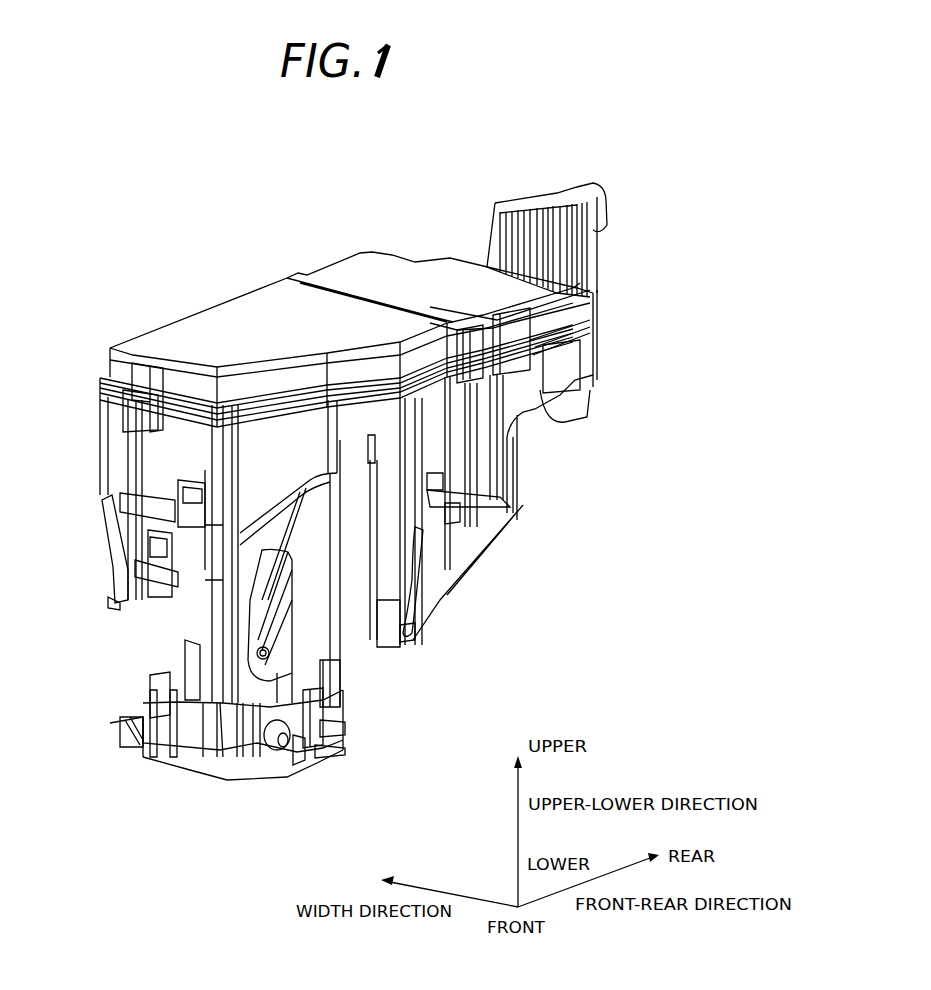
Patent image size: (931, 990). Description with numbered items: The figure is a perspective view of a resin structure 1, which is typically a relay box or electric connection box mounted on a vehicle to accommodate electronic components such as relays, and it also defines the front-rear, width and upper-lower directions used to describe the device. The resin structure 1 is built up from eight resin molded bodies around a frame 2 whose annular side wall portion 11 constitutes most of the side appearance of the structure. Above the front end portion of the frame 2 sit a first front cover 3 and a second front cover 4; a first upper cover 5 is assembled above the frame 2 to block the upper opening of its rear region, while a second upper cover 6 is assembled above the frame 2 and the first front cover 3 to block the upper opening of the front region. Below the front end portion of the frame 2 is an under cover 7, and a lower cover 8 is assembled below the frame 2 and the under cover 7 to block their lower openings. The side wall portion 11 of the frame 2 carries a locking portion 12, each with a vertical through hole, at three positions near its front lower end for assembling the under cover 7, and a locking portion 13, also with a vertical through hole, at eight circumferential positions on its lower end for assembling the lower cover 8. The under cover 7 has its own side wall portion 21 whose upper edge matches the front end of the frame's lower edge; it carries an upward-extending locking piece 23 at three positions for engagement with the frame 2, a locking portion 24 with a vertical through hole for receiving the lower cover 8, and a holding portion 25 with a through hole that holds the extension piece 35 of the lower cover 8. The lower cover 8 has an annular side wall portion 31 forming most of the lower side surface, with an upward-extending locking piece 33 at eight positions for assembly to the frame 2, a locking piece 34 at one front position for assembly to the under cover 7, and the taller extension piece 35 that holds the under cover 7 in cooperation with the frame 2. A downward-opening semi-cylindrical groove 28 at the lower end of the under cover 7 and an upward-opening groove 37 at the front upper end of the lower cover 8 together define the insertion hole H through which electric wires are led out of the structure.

The resin structure 1 is at (172, 258).
The frame 2 is at (432, 448).
The first front cover 3 is at (100, 441).
The second front cover 4 is at (100, 527).
The first upper cover 5 is at (355, 250).
The second upper cover 6 is at (238, 285).
The under cover 7 is at (231, 745).
The lower cover 8 is at (478, 563).
The side wall portion 11 is at (357, 557).
The locking portion 12 is at (165, 685).
The locking portion 13 is at (597, 374).
The side wall portion 21 is at (175, 745).
The locking piece 23 is at (190, 655).
The locking portion 24 is at (330, 748).
The holding portion 25 is at (130, 745).
The groove 28 is at (299, 762).
The side wall portion 31 is at (195, 770).
The locking piece 33 is at (440, 484).
The locking piece 34 is at (345, 725).
The extension piece 35 is at (150, 690).
The groove 37 is at (285, 750).
The insertion hole H is at (275, 752).